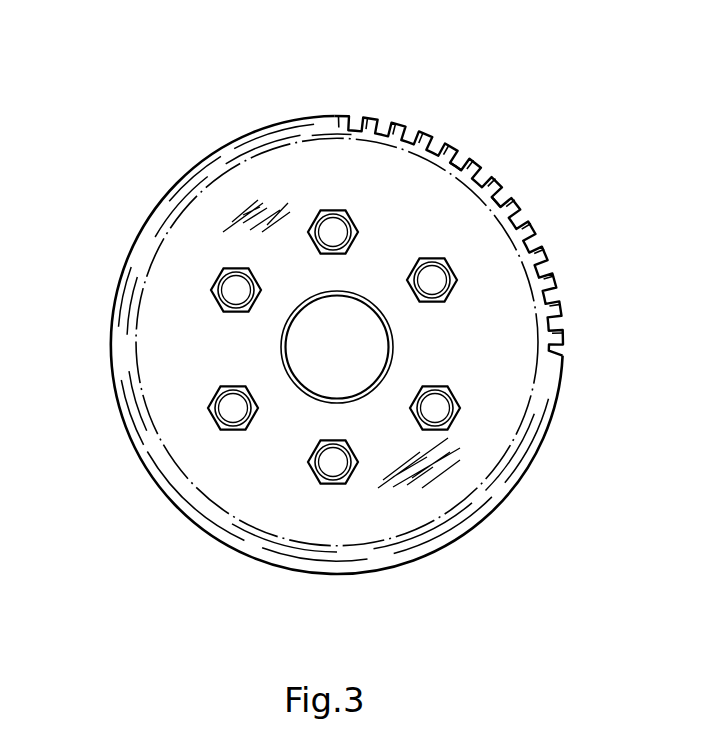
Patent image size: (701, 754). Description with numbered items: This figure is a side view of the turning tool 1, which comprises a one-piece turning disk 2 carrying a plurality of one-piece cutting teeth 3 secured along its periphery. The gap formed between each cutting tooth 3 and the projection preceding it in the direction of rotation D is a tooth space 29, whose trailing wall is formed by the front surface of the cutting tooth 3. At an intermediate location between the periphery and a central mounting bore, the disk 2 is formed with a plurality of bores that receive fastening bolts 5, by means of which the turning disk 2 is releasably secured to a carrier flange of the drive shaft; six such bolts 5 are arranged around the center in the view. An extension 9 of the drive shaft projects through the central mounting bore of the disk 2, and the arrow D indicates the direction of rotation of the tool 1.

The turning tool 1 is at (583, 207).
The turning disk 2 is at (207, 453).
The cutting tooth 3 is at (365, 117).
The tooth space 29 is at (504, 206).
The fastening bolts 5 is at (236, 292).
The extension of drive shaft 9 is at (336, 347).
The direction of rotation D is at (108, 214).